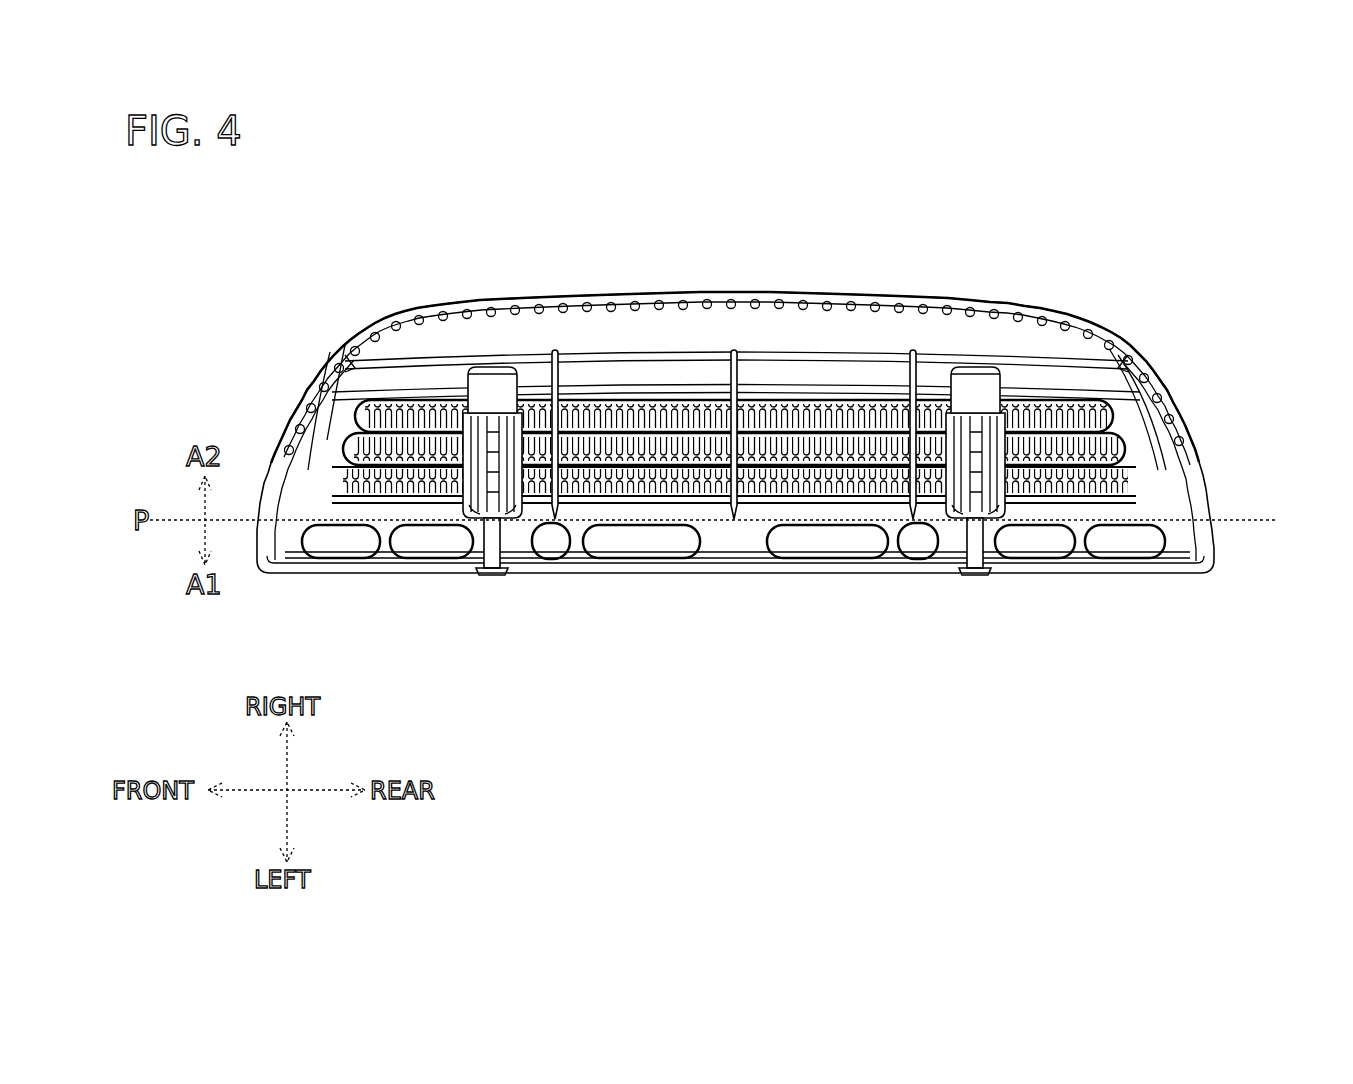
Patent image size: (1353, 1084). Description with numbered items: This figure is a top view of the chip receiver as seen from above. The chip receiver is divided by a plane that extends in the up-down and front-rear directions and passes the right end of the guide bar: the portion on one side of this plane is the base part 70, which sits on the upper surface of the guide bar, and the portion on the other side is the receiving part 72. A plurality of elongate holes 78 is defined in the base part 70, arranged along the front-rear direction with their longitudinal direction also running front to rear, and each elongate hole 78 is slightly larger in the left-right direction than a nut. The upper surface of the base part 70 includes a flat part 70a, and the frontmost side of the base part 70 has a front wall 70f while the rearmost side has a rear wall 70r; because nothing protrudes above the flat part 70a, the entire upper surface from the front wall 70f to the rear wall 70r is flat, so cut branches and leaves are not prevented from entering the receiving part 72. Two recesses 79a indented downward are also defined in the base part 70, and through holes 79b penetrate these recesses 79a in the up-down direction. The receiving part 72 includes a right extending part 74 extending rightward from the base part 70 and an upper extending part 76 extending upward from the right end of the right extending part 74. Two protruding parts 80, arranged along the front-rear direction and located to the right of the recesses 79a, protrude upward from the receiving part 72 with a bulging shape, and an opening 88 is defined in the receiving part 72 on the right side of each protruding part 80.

The base part 70 is at (288, 557).
The front wall 70f is at (253, 537).
The rear wall 70r is at (1205, 533).
The flat part 70a is at (1180, 553).
The receiving part 72 is at (728, 357).
The right extending part 74 is at (305, 472).
The upper extending part 76 is at (336, 432).
The elongate holes 78 is at (340, 547).
The recesses 79a is at (491, 572).
The through holes 79b is at (493, 545).
The protruding parts 80 is at (507, 460).
The opening 88 is at (485, 392).